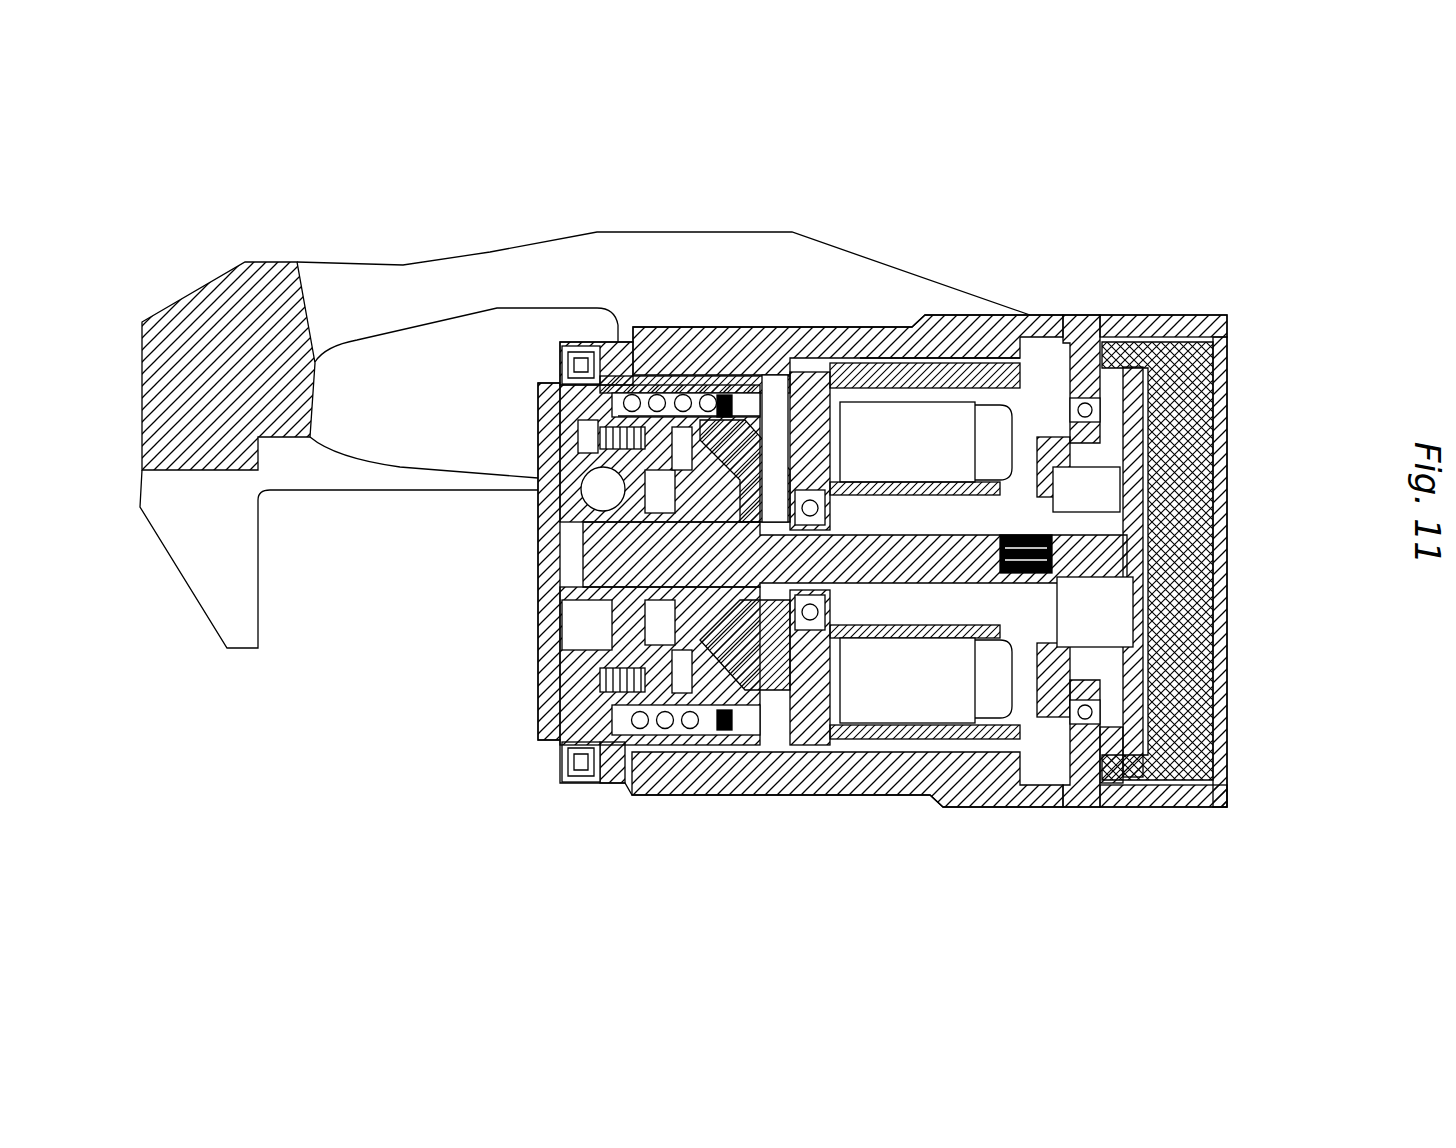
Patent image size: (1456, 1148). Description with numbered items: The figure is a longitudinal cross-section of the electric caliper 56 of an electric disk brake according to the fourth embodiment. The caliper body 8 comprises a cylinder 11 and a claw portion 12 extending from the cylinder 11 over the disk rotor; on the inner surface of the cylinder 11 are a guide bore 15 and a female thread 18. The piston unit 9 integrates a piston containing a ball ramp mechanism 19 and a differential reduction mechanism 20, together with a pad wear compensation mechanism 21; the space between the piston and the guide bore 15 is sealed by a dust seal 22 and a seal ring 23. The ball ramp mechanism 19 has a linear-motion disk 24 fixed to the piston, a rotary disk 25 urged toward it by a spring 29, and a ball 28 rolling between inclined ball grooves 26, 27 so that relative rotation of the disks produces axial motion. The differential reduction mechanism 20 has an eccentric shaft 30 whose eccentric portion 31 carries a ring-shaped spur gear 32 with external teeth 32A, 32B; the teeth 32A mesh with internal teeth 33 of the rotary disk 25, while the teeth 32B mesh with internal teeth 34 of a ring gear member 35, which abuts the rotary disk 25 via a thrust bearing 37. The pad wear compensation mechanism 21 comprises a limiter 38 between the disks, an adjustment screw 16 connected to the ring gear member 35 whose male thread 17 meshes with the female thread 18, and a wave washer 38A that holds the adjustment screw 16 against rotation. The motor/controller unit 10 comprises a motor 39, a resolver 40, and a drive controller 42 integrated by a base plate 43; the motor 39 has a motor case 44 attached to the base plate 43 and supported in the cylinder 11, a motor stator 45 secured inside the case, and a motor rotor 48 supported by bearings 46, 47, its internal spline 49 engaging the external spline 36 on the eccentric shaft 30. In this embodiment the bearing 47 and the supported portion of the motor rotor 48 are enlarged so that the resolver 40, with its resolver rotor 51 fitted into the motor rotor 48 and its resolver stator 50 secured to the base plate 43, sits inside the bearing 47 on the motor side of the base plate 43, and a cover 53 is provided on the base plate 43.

The caliper body 8 is at (848, 352).
The piston unit 9 is at (757, 750).
The motor/controller unit 10 is at (1167, 304).
The cylinder 11 is at (882, 332).
The claw portion 12 is at (195, 560).
The guide bore 15 is at (630, 797).
The adjustment screw 16 is at (795, 750).
The male thread 17 is at (906, 750).
The female thread 18 is at (842, 745).
The ball ramp mechanism 19 is at (545, 650).
The differential reduction mechanism 20 is at (710, 380).
The pad wear compensation mechanism 21 is at (548, 398).
The dust seal 22 is at (557, 767).
The seal ring 23 is at (617, 783).
The linear-motion disk 24 is at (536, 480).
The rotary disk 25 is at (520, 388).
The ball groove 26 is at (535, 630).
The ball groove 27 is at (550, 700).
The ball 28 is at (575, 490).
The spring 29 is at (650, 400).
The eccentric shaft 30 is at (560, 560).
The eccentric portion 31 is at (555, 520).
The spur gear 32 is at (730, 400).
The external teeth 32A is at (683, 750).
The external teeth 32B is at (727, 750).
The internal teeth 33 is at (668, 418).
The internal teeth 34 is at (822, 380).
The ring gear member 35 is at (760, 370).
The external spline 36 is at (1055, 578).
The thrust bearing 37 is at (690, 395).
The limiter 38 is at (602, 345).
The wave washer 38A is at (783, 770).
The motor 39 is at (941, 749).
The resolver 40 is at (1186, 807).
The drive controller 42 is at (1215, 388).
The base plate 43 is at (1088, 315).
The motor case 44 is at (1038, 315).
The motor stator 45 is at (922, 480).
The bearing 46 is at (935, 417).
The bearing 47 is at (1228, 340).
The motor rotor 48 is at (870, 605).
The internal spline 49 is at (1140, 592).
The resolver stator 50 is at (1108, 497).
The resolver rotor 51 is at (1108, 432).
The cover 53 is at (1230, 795).
The electric caliper 56 is at (1025, 174).